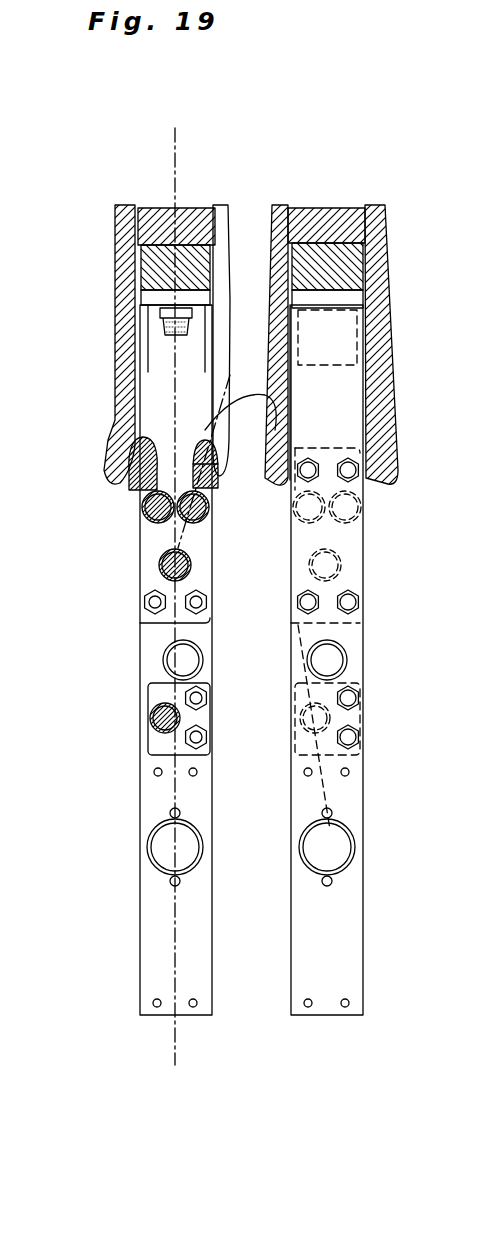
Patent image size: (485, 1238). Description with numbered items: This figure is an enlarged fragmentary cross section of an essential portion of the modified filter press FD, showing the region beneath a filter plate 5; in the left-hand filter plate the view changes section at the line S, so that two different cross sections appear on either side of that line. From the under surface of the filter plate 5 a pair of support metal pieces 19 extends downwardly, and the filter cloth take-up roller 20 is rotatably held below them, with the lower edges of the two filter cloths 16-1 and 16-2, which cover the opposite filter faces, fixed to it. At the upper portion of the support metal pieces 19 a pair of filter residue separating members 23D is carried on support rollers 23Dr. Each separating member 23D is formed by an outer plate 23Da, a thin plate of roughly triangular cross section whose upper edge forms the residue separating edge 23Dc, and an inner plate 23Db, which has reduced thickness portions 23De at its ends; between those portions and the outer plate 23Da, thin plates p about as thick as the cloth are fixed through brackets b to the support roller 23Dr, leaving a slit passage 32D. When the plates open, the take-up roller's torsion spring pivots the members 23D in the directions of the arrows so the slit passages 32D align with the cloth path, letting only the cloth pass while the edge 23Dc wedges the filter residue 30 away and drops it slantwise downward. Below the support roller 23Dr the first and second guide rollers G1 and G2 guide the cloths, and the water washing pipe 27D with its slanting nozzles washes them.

The line S— S is at (175, 598).
The filter press FD is at (303, 110).
The filter plate 5 is at (163, 208).
The filter cloth 16-1 is at (110, 222).
The filter cloth 16-2 is at (227, 210).
The support metal piece 19 is at (212, 921).
The filter cloth take-up roller 20 is at (160, 845).
The filter residue separating member 23D is at (157, 437).
The outer plate 23Da is at (135, 478).
The inner plate 23Db is at (150, 485).
The residue separating edge 23Dc is at (122, 460).
The reduced thickness portion 23De is at (250, 392).
The support roller 23Dr is at (160, 575).
The water washing pipe 27D is at (168, 658).
The filter residue 30 is at (267, 304).
The slit passage 32D is at (152, 498).
The first guide roller G1 is at (210, 596).
The second guide roller G2 is at (152, 718).
The bracket b is at (148, 515).
The thin plate p is at (220, 440).